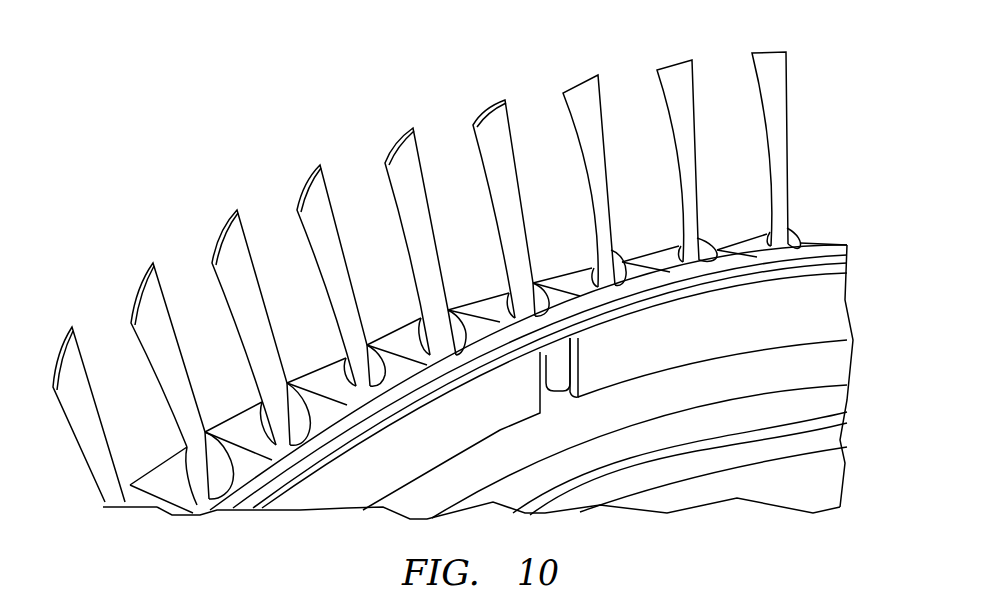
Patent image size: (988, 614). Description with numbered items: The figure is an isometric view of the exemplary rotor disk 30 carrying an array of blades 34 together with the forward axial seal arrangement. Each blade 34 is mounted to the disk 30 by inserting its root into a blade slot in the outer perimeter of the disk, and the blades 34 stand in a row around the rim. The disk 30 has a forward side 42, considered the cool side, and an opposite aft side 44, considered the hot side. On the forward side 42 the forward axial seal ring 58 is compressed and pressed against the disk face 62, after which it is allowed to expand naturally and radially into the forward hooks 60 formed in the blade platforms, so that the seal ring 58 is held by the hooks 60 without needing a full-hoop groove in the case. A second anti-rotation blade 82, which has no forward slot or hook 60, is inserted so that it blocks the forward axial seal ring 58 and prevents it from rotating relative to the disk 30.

The rotor disk 30 is at (827, 437).
The blade 34 is at (408, 140).
The forward side 42 is at (783, 494).
The aft side 44 is at (176, 173).
The forward axial seal ring 58 is at (732, 333).
The forward hook 60 is at (352, 455).
The disk face 62 is at (708, 393).
The second anti-rotation blade 82 is at (493, 110).